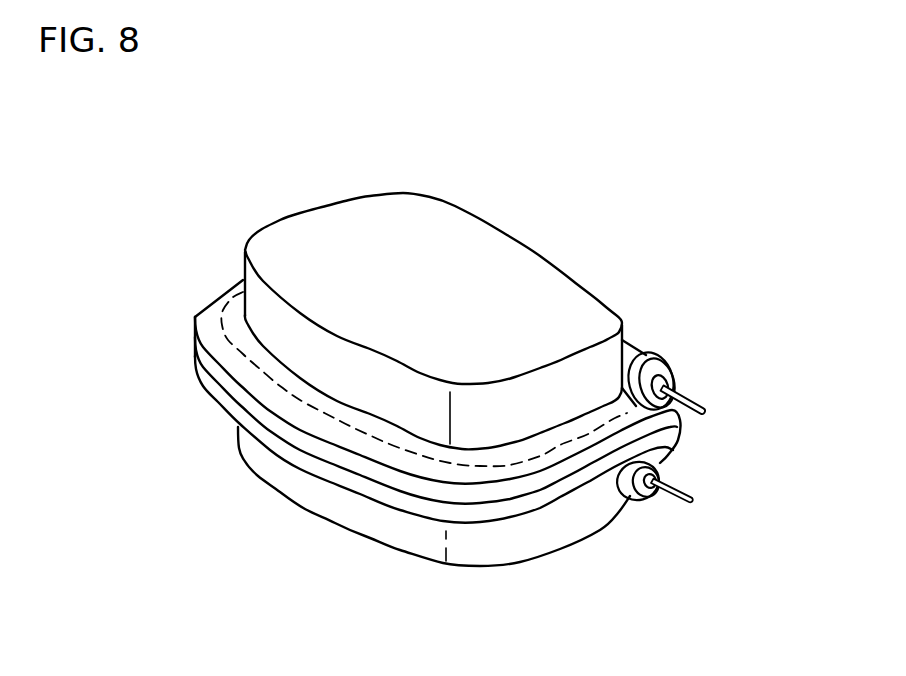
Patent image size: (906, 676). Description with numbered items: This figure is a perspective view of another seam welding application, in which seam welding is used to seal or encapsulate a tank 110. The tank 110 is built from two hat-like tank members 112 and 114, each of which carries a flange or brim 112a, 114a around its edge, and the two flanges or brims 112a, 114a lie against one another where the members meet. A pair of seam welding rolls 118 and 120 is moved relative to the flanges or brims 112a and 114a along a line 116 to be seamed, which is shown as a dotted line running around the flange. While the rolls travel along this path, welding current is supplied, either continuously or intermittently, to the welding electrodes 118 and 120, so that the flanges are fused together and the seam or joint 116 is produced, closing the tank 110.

The tank 110 is at (524, 220).
The hat-like tank member 112 is at (320, 230).
The flange or brim 112a is at (443, 495).
The hat-like tank member 114 is at (303, 498).
The flange or brim 114a is at (530, 502).
The line to be seamed 116 is at (258, 376).
The seam welding roll 118 is at (660, 354).
The seam welding roll 120 is at (634, 502).